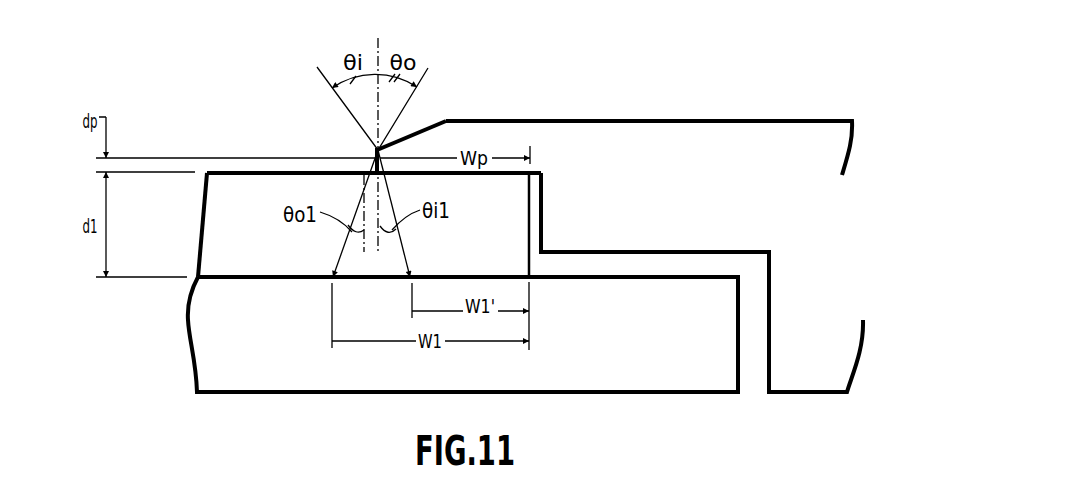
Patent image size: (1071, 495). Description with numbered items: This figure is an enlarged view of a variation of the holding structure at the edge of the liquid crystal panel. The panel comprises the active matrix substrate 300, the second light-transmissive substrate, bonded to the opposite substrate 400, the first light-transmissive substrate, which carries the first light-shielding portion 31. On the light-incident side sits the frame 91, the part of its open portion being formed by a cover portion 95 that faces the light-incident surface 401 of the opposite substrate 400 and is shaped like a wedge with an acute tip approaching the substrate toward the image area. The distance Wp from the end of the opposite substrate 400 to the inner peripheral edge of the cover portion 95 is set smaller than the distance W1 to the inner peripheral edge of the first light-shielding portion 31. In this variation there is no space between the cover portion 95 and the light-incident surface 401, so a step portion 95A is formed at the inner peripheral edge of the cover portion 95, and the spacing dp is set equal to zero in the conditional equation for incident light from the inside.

The first light-shielding portion 31 is at (371, 278).
The frame 91 is at (760, 128).
The cover portion 95 is at (427, 140).
The step portion 95A is at (372, 155).
The active matrix substrate 300 is at (192, 347).
The opposite substrate 400 is at (509, 257).
The light-incident surface 401 is at (240, 172).